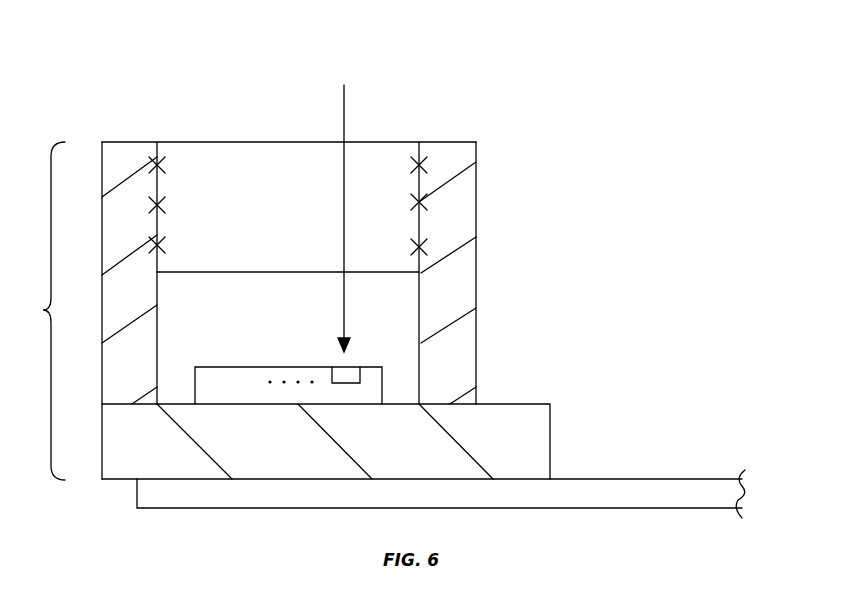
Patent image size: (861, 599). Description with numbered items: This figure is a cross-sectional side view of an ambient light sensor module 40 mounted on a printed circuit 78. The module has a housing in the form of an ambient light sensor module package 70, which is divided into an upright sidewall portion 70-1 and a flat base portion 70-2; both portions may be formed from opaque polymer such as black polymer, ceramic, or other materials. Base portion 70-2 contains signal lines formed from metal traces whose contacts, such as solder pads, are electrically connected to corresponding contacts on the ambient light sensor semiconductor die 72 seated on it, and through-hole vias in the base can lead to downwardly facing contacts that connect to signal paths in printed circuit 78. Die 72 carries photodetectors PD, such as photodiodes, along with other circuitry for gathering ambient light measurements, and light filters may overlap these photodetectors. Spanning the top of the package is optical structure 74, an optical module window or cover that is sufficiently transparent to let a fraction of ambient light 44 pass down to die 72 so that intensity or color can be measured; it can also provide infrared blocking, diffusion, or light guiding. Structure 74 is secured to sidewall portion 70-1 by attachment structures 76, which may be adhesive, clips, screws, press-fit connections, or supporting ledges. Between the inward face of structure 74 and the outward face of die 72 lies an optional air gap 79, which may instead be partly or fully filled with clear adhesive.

The ambient light sensor module 40 is at (453, 49).
The ambient light 44 is at (345, 107).
The ambient light sensor module package 70 is at (40, 311).
The sidewall portion 70-1 is at (460, 200).
The base portion 70-2 is at (530, 440).
The ambient light sensor semiconductor die 72 is at (223, 378).
The optical structure 74 is at (283, 152).
The attachment structures 76 is at (165, 165).
The printed circuit 78 is at (745, 492).
The air gap 79 is at (405, 293).
The photodetectors PD is at (345, 384).